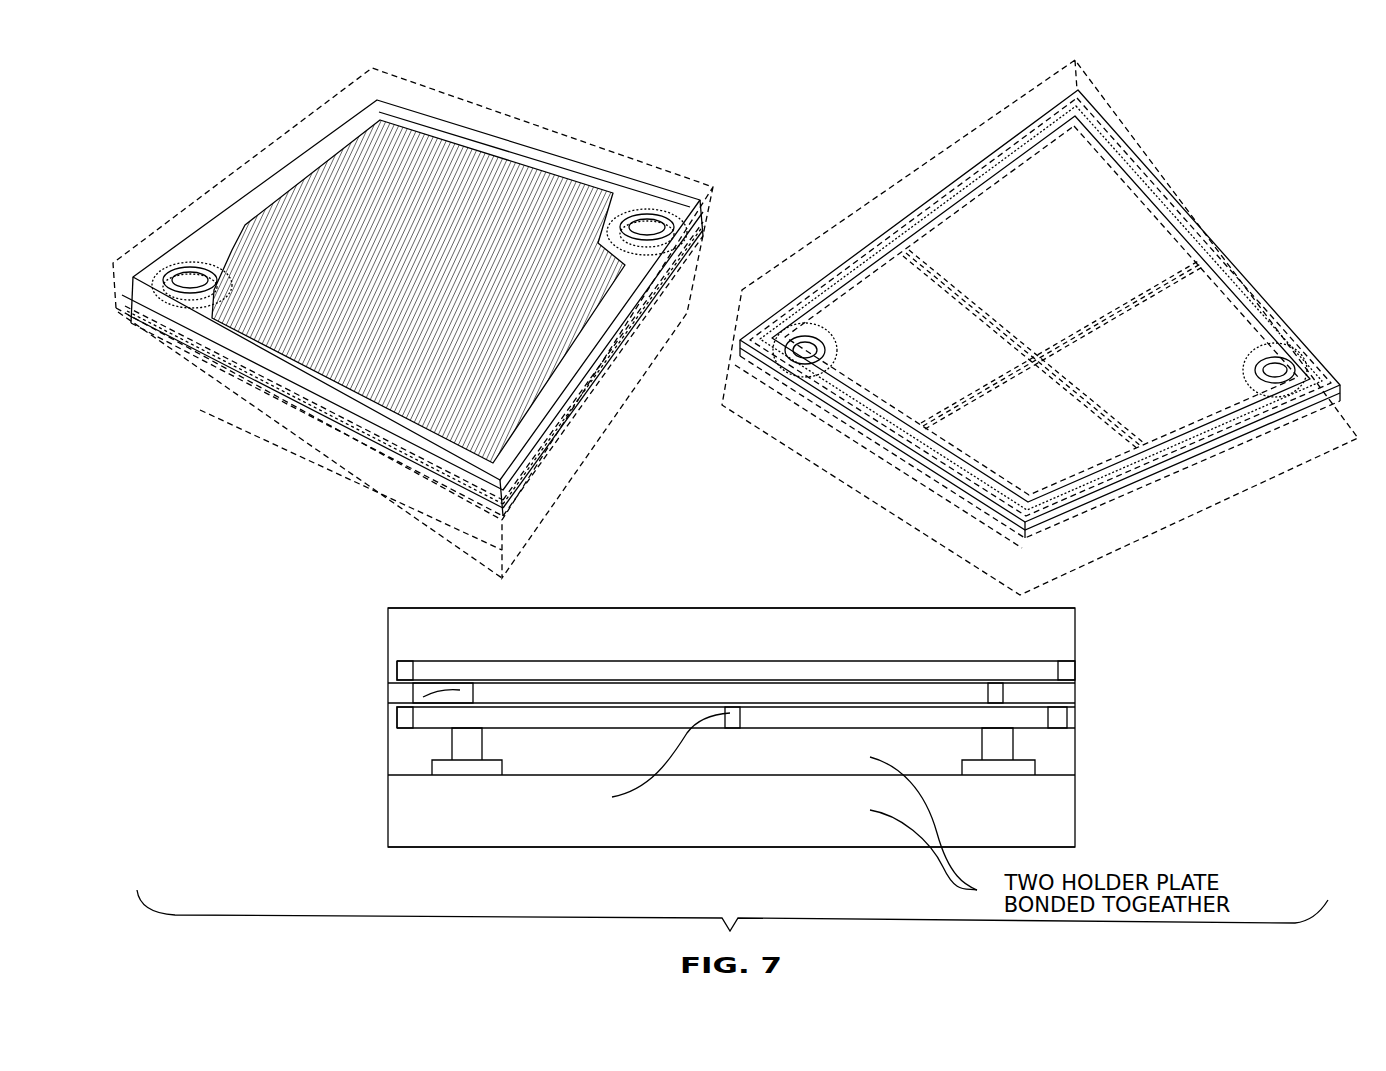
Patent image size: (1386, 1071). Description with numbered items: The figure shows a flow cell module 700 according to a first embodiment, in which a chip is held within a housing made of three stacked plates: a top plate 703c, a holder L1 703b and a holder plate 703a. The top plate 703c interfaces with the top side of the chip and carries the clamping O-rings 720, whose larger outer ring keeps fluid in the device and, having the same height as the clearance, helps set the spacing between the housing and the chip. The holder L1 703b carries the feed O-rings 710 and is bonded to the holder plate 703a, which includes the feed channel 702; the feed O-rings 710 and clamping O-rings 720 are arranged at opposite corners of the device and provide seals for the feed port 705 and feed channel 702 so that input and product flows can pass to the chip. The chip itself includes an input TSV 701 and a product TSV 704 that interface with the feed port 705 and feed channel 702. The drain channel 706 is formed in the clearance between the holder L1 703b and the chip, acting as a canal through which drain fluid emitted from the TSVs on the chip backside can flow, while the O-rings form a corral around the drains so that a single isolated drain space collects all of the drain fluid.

The flow cell module / chip 700 is at (1078, 703).
The input TSV 701 is at (1010, 697).
The feed channel 702 is at (433, 510).
The holder plate 703a is at (705, 841).
The holder L1 703b is at (705, 768).
The top plate 703c is at (731, 634).
The product TSV 704 is at (410, 712).
The feed port 705 is at (447, 747).
The drain channel 706 is at (302, 410).
The feed O-rings 710 is at (1270, 343).
The clamping O-rings 720 is at (188, 265).